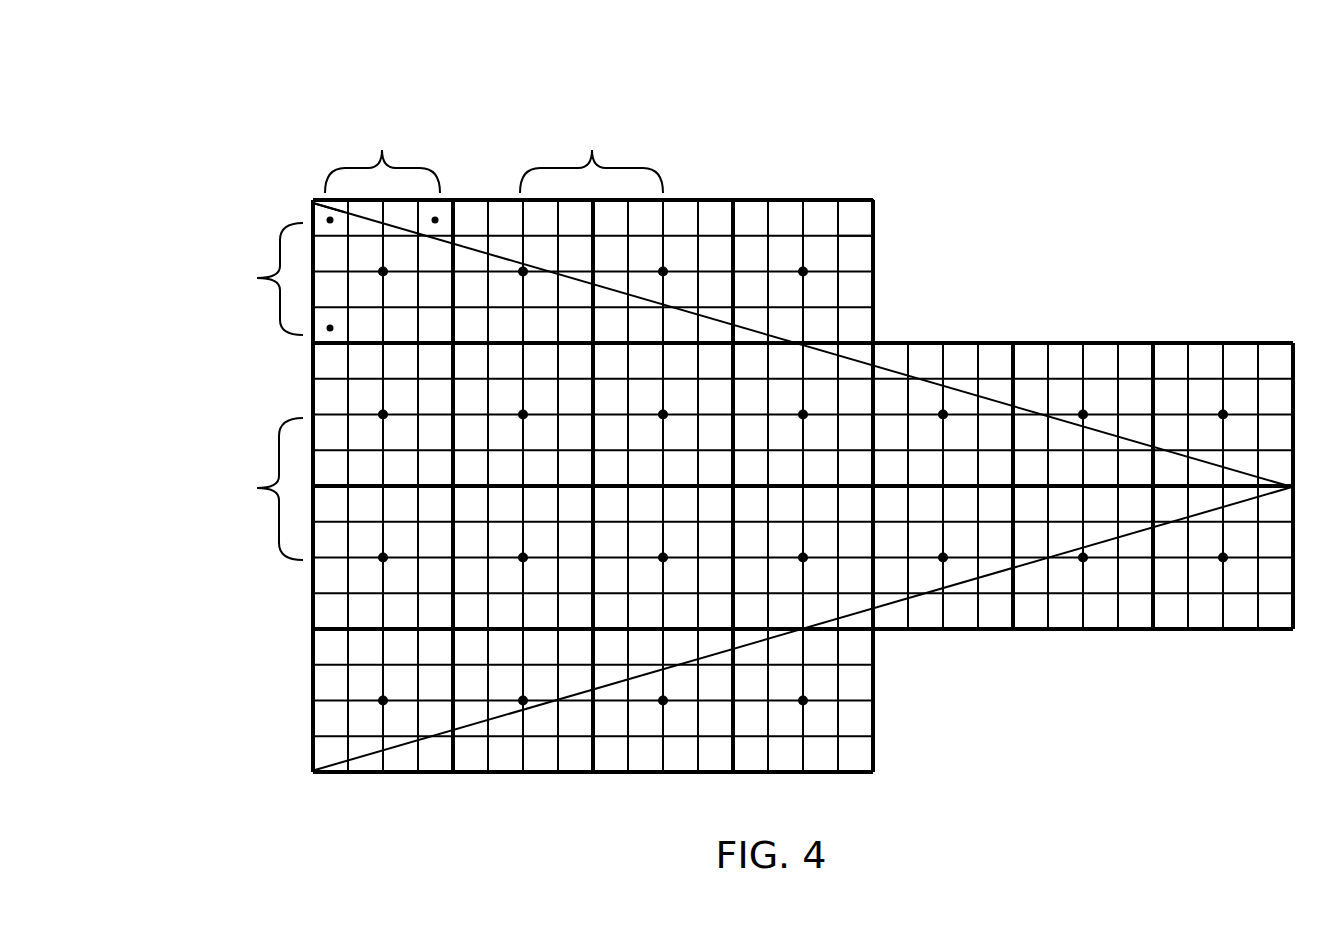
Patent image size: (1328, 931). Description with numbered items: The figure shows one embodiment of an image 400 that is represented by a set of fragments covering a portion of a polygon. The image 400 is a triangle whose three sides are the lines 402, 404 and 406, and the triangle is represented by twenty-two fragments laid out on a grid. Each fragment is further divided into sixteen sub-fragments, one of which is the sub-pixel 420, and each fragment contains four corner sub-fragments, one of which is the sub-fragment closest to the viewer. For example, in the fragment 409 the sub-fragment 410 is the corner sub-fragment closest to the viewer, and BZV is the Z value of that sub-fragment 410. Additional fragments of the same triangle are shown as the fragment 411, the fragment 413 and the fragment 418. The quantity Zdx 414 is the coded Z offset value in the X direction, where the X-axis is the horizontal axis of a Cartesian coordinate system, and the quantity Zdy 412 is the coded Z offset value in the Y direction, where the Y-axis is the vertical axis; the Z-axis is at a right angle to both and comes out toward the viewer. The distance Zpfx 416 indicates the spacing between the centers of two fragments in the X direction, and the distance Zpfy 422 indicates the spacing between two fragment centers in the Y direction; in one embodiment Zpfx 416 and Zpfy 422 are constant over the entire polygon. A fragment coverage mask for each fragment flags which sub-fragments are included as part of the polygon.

The image 400 is at (1265, 114).
The line 402 is at (890, 370).
The line 404 is at (884, 605).
The line 406 is at (313, 720).
The fragment 409 is at (320, 202).
The sub-fragment 410 is at (313, 205).
The fragment 411 is at (495, 201).
The Zdy 412 is at (250, 279).
The fragment 413 is at (270, 381).
The Zdx 414 is at (382, 141).
The Zpfx 416 is at (591, 141).
The fragment 418 is at (818, 200).
The sub-pixel 420 is at (853, 217).
The Zpfy 422 is at (252, 489).